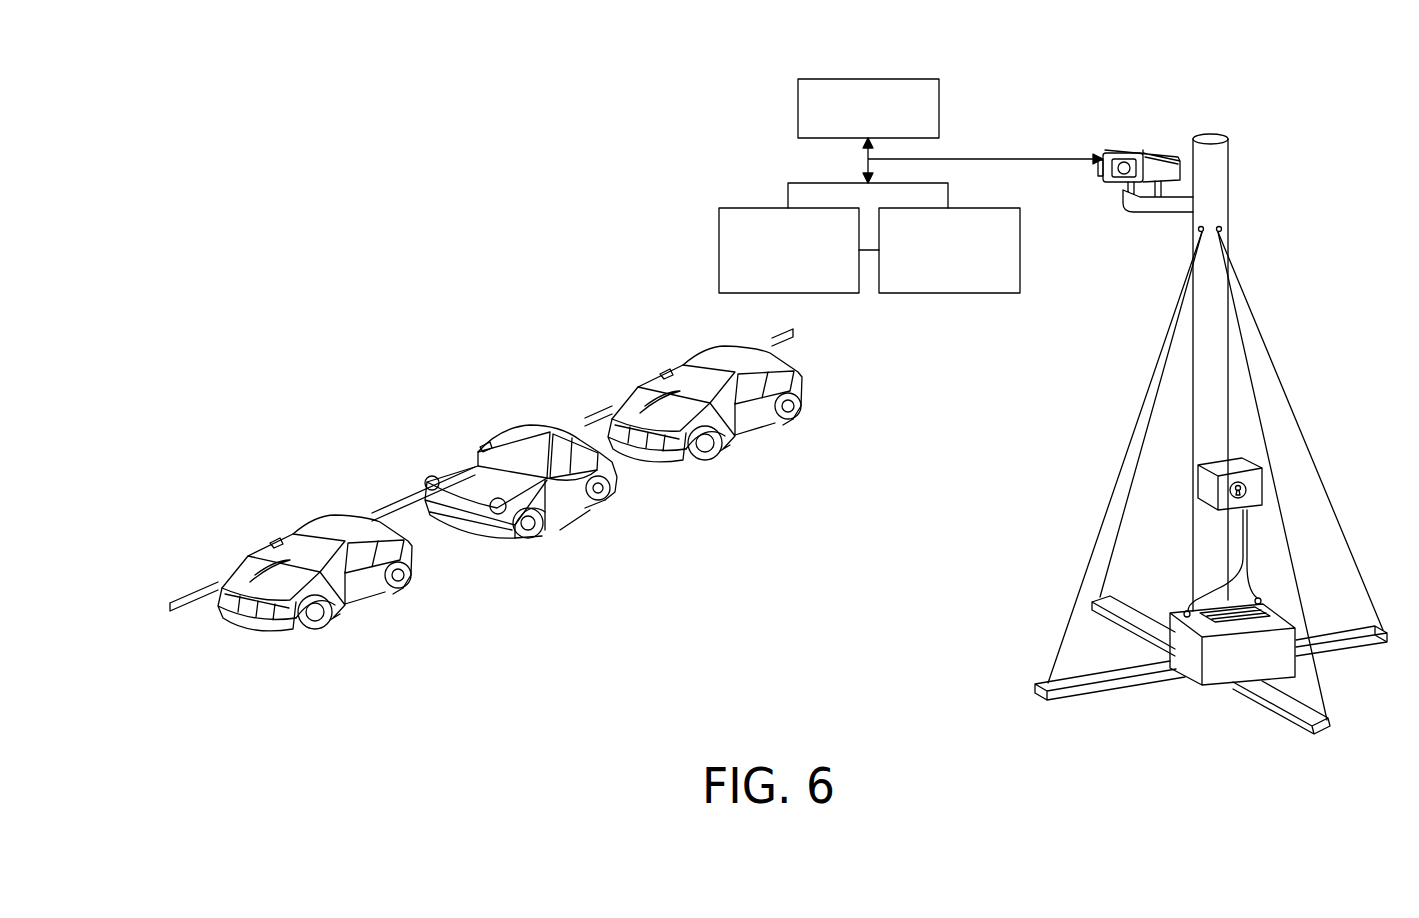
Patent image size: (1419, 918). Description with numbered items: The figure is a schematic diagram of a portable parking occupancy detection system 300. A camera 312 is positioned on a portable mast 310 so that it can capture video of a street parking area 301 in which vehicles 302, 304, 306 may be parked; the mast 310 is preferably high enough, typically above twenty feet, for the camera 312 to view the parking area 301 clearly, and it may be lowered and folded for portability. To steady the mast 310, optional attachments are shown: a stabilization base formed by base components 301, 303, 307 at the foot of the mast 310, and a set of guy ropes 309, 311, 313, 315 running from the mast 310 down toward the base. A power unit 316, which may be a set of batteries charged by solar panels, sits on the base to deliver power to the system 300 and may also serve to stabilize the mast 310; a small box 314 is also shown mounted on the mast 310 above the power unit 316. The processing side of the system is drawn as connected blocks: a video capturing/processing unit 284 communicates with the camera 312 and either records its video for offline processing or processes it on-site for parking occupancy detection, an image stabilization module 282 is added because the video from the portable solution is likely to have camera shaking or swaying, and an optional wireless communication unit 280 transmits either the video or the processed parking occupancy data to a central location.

The wireless communication unit 280 is at (798, 108).
The image stabilization module 282 is at (719, 250).
The video capturing/processing unit 284 is at (1020, 250).
The portable parking occupancy detection system 300 is at (517, 124).
The street parking area 301 is at (507, 347).
The vehicle 302 is at (678, 366).
The base component 303 is at (1110, 697).
The vehicle 304 is at (507, 428).
The vehicle 306 is at (290, 535).
The base component 307 is at (1272, 717).
The guy rope 309 is at (1125, 511).
The portable mast 310 is at (1230, 172).
The guy rope 311 is at (1066, 625).
The camera 312 is at (1133, 141).
The guy rope 313 is at (1265, 328).
The control box 314 is at (1248, 458).
The guy rope 315 is at (1254, 393).
The power unit 316 is at (1218, 687).